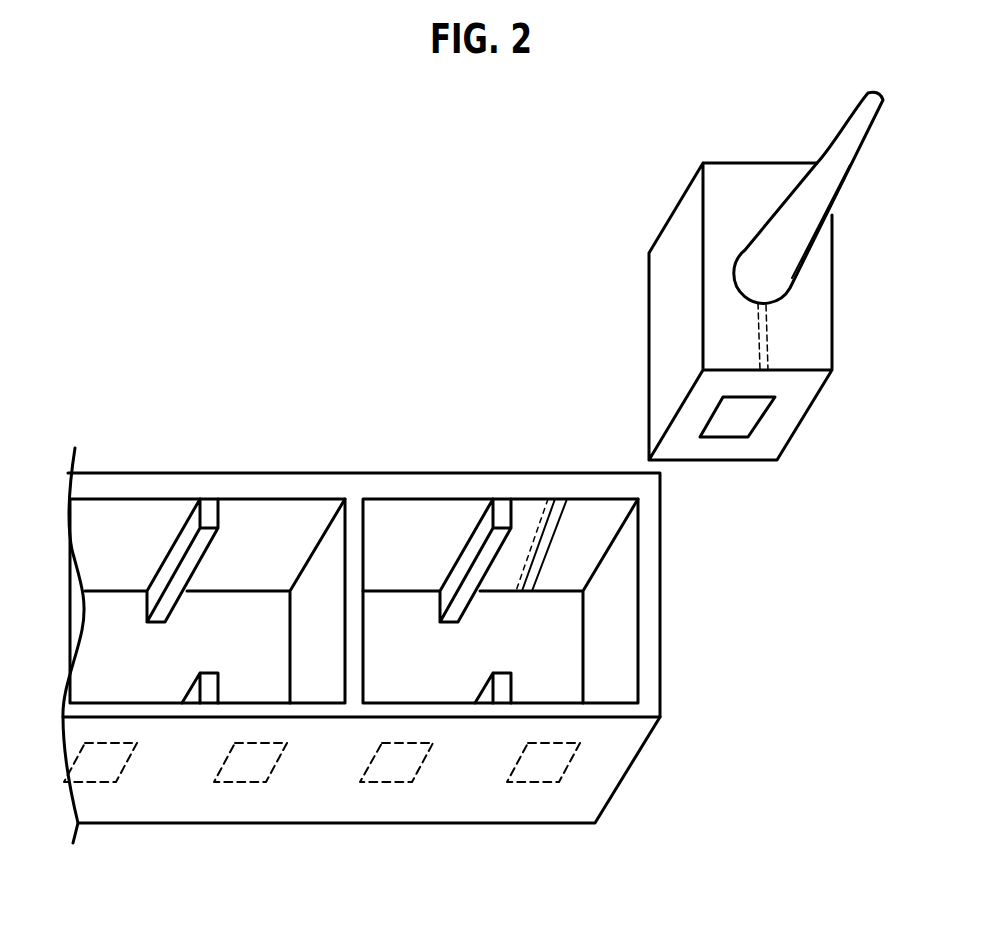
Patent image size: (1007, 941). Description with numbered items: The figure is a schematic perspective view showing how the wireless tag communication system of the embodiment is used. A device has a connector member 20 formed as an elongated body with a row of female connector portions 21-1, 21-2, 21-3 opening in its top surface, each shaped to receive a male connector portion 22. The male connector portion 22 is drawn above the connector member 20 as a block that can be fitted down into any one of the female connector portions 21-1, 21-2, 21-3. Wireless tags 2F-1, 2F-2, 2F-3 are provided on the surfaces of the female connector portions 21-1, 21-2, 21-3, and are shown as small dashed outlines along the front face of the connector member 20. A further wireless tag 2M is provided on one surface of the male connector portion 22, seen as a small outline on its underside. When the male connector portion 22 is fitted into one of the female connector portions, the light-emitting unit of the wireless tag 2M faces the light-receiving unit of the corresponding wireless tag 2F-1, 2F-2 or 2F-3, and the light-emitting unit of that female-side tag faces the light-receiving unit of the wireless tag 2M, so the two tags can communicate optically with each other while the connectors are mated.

The connector member 20 is at (152, 471).
The female connector portion 21-1 is at (558, 643).
The female connector portion 21-2 is at (388, 617).
The female connector portion 21-3 is at (240, 617).
The male connector portion 22 is at (745, 163).
The wireless tag 2M is at (735, 425).
The wireless tag 2F-1 is at (535, 782).
The wireless tag 2F-2 is at (390, 782).
The wireless tag 2F-3 is at (233, 782).